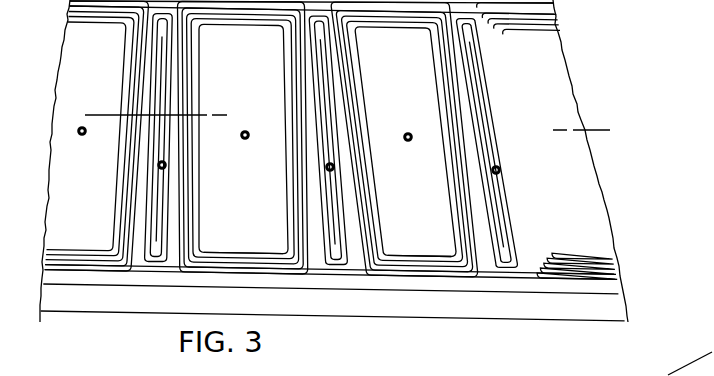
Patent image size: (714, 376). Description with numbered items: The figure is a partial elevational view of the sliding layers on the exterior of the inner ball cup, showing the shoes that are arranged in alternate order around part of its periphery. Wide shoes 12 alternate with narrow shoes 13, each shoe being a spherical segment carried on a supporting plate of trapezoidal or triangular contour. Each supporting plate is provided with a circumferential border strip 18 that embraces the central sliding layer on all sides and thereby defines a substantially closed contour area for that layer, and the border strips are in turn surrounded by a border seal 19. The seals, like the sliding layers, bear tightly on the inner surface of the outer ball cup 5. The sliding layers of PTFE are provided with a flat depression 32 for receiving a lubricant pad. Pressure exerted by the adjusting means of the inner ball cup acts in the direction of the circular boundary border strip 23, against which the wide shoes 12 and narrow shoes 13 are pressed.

The outer ball cup 5 is at (597, 124).
The wide shoe 12 is at (410, 325).
The narrow shoe 13 is at (335, 219).
The border strip 18 is at (205, 265).
The border seal 19 is at (445, 40).
The circular boundary border strip 23 is at (583, 288).
The flat depression 32 is at (447, 327).